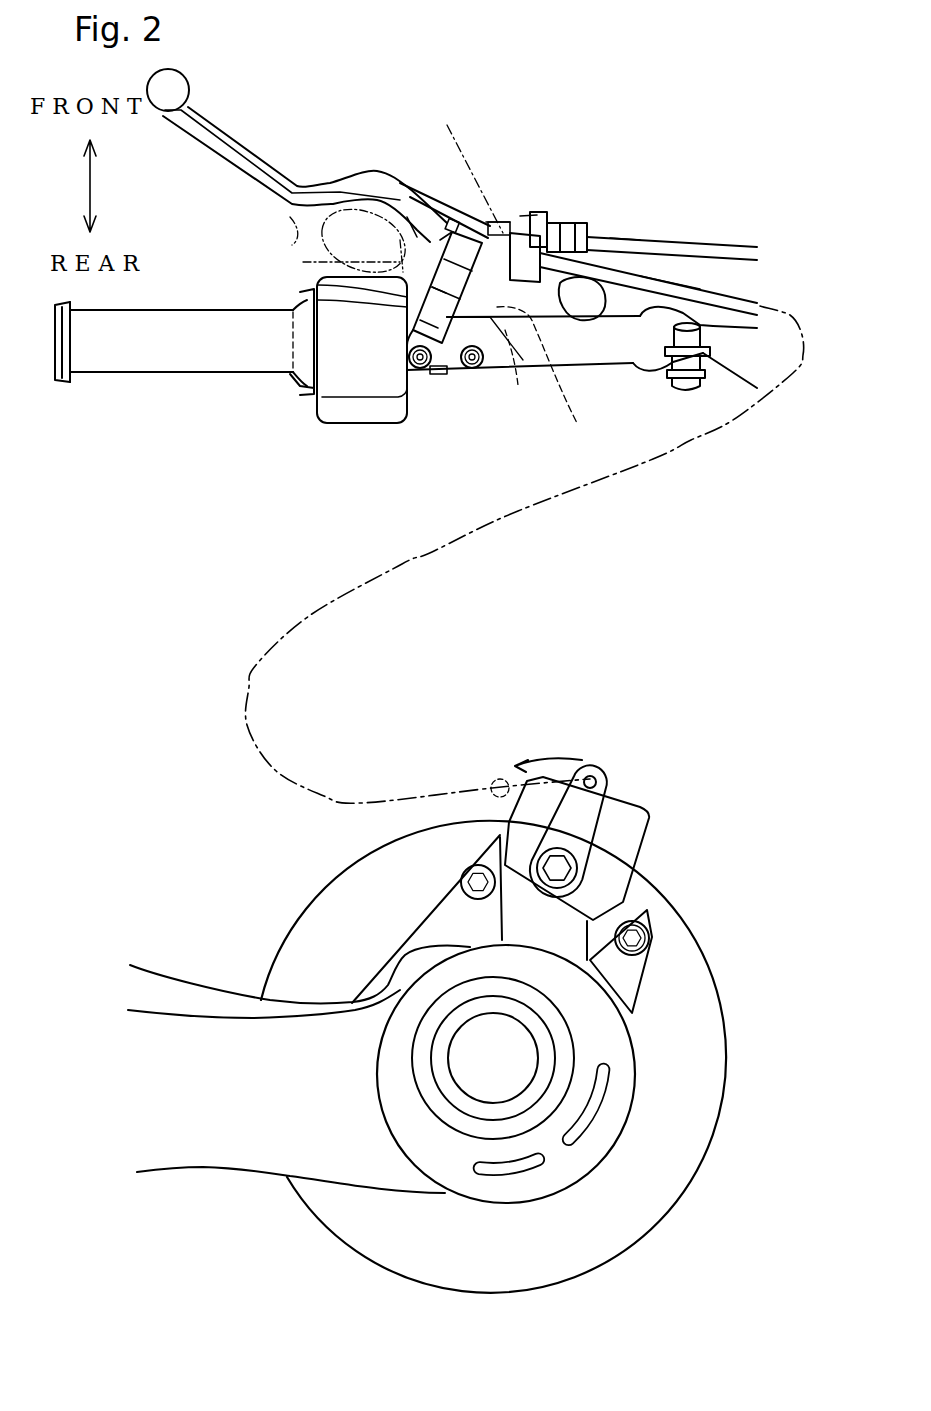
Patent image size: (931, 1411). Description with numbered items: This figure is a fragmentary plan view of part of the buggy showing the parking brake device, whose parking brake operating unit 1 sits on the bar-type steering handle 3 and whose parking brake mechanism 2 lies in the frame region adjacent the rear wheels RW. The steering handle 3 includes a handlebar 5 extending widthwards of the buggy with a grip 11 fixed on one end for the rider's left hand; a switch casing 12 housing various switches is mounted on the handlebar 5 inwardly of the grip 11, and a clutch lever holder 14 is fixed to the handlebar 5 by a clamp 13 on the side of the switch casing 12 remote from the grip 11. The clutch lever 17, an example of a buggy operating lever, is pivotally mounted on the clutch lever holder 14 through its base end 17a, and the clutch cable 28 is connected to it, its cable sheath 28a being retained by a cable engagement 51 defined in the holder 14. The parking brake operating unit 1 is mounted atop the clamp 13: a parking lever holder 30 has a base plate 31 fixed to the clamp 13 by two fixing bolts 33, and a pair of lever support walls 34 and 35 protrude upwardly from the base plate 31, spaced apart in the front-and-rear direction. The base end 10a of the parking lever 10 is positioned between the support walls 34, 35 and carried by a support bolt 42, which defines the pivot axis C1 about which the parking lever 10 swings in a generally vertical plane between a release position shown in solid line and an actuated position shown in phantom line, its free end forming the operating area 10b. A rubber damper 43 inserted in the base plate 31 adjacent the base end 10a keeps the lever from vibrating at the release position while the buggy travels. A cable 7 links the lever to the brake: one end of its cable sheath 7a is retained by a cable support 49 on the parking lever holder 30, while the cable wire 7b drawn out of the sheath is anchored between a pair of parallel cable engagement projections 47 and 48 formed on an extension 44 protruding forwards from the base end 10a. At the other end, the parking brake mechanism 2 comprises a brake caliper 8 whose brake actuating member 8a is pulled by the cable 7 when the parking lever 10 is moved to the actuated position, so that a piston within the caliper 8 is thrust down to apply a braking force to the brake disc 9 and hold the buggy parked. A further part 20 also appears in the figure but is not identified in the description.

The parking brake operating unit 1 is at (490, 216).
The parking brake mechanism 2 is at (579, 861).
The bar-type steering handle 3 is at (762, 312).
The handlebar 5 is at (752, 316).
The cable 7 is at (724, 278).
The cable sheath 7a is at (675, 287).
The cable wire 7b is at (516, 222).
The brake caliper 8 is at (647, 840).
The brake actuating member 8a is at (500, 779).
The brake disc 9 is at (677, 968).
The parking lever 10 is at (378, 233).
The base end 10a is at (457, 372).
The operating area 10b is at (324, 232).
The grip 11 is at (170, 364).
The switch casing 12 is at (317, 424).
The clamp 13 is at (387, 397).
The clutch lever holder 14 is at (533, 236).
The clutch lever 17 is at (235, 142).
The base end 17a is at (530, 215).
The tab 20 is at (437, 378).
The clutch cable 28 is at (661, 231).
The cable sheath 28a is at (627, 242).
The parking lever holder 30 is at (518, 385).
The base plate 31 is at (413, 328).
The fixing bolts 33 is at (420, 370).
The lever support wall 34 is at (340, 260).
The lever support wall 35 is at (417, 237).
The support bolt 42 is at (325, 284).
The rubber damper 43 is at (577, 423).
The extension 44 is at (483, 218).
The cable engagement projection 47 is at (440, 240).
The cable engagement projection 48 is at (450, 222).
The cable support 49 is at (545, 220).
The cable engagement 51 is at (577, 230).
The pivot axis C1 is at (465, 164).
The rear wheels RW is at (739, 1085).